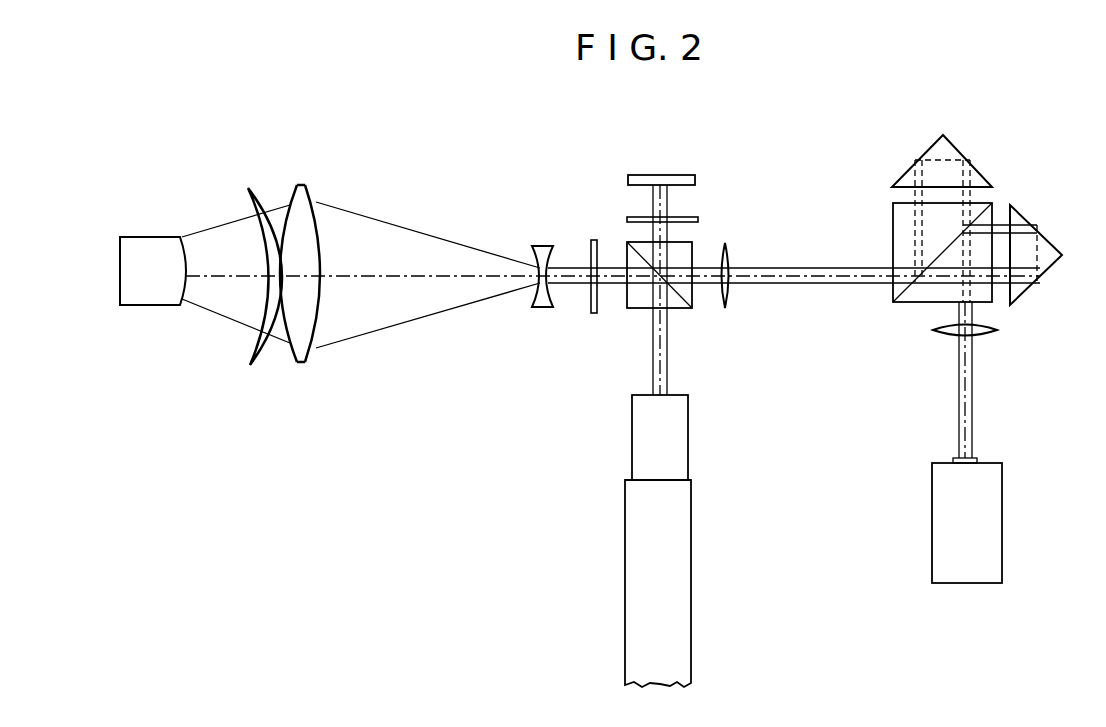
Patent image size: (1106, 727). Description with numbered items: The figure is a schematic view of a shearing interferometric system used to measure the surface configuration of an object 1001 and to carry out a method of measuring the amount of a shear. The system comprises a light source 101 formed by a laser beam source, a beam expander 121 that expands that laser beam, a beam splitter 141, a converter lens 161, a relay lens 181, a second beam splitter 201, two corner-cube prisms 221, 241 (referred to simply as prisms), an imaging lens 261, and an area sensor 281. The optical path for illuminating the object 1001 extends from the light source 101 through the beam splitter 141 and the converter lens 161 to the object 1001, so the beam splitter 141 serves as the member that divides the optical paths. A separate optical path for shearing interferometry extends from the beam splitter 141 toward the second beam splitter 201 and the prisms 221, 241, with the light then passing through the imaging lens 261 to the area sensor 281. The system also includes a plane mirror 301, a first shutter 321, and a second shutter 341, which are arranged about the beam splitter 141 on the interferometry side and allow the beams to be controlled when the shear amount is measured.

The object 1001 is at (159, 300).
The converter lens 161 is at (558, 173).
The first shutter 321 is at (593, 316).
The beam splitter 141 is at (676, 306).
The plane mirror 301 is at (683, 179).
The second shutter 341 is at (690, 218).
The relay lens 181 is at (730, 258).
The beam expander 121 is at (680, 431).
The light source 101 is at (683, 606).
The beam splitter 201 is at (917, 297).
The corner-cube prism 241 is at (950, 149).
The corner-cube prism 221 is at (1049, 258).
The imaging lens 261 is at (985, 331).
The area sensor 281 is at (995, 497).